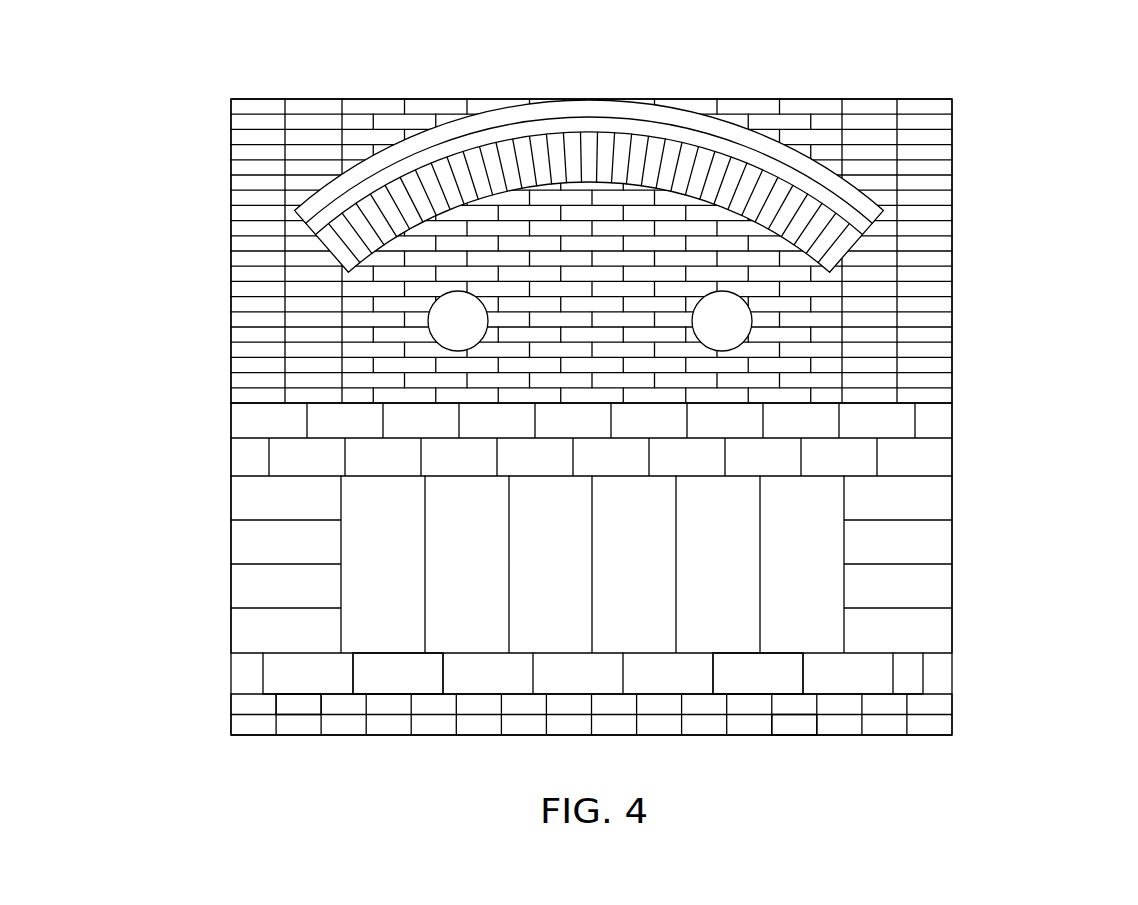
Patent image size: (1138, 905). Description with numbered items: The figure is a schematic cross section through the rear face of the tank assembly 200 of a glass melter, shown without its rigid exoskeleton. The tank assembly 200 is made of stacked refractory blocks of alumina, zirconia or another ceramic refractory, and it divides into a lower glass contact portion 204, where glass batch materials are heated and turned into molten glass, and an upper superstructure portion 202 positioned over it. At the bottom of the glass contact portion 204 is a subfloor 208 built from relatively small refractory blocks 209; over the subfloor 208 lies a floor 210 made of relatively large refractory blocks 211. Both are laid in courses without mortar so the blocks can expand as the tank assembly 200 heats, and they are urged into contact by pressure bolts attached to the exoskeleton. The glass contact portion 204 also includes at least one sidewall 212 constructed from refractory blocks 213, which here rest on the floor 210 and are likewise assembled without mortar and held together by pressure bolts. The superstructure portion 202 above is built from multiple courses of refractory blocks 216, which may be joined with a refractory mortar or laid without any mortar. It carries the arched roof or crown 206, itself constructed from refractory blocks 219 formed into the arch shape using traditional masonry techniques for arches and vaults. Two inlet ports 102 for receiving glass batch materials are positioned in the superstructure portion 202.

The tank assembly 200 is at (993, 110).
The superstructure portion 202 is at (569, 231).
The glass contact portion 204 is at (610, 592).
The crown 206 is at (589, 166).
The subfloor 208 is at (654, 724).
The refractory blocks 209 is at (547, 737).
The floor 210 is at (658, 703).
The refractory blocks 211 is at (403, 685).
The sidewall 212 is at (964, 471).
The refractory blocks 213 is at (362, 624).
The refractory blocks 216 is at (790, 135).
The refractory blocks 219 is at (442, 163).
The inlet ports 102 is at (437, 333).